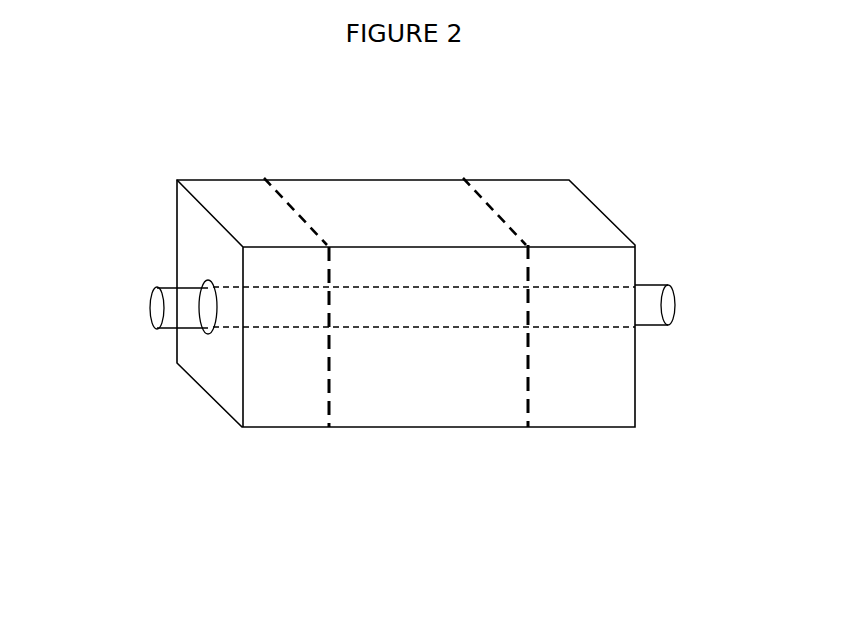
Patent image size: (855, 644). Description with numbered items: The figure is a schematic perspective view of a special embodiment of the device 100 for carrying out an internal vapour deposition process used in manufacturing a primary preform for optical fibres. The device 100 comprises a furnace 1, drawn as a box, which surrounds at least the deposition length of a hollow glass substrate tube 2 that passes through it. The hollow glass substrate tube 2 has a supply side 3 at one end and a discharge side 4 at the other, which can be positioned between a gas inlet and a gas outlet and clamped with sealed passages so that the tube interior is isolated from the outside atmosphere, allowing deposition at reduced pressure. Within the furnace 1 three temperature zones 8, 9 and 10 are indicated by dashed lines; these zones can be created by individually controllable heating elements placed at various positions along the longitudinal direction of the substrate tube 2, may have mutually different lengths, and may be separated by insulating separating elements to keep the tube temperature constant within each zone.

The device 100 is at (575, 117).
The furnace 1 is at (273, 148).
The hollow glass substrate tube 2 is at (167, 277).
The supply side 3 is at (145, 303).
The discharge side 4 is at (681, 303).
The temperature zone 8 is at (290, 447).
The temperature zone 9 is at (429, 447).
The temperature zone 10 is at (582, 438).